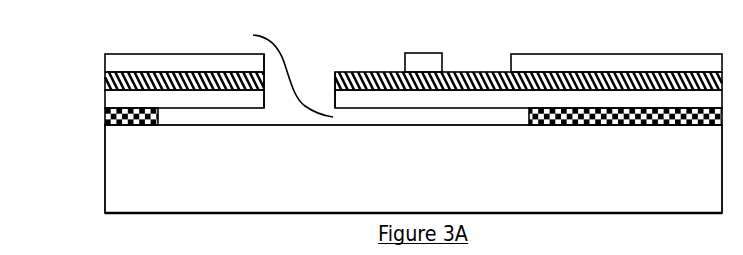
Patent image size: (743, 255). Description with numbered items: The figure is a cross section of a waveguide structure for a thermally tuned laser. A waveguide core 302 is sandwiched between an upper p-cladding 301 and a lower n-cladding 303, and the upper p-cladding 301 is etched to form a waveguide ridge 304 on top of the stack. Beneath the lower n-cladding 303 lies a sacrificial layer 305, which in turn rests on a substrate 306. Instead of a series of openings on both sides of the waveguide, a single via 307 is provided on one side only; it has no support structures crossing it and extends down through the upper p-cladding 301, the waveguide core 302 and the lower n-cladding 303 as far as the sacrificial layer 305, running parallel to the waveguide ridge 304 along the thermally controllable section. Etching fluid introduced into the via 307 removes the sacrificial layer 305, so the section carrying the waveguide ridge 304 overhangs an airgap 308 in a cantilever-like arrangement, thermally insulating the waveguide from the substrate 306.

The upper p-cladding 301 is at (193, 54).
The waveguide core 302 is at (105, 82).
The lower n-cladding 303 is at (105, 97).
The waveguide ridge 304 is at (442, 62).
The sacrificial layer 305 is at (105, 114).
The substrate 306 is at (105, 142).
The via 307 is at (307, 75).
The airgap 308 is at (272, 71).